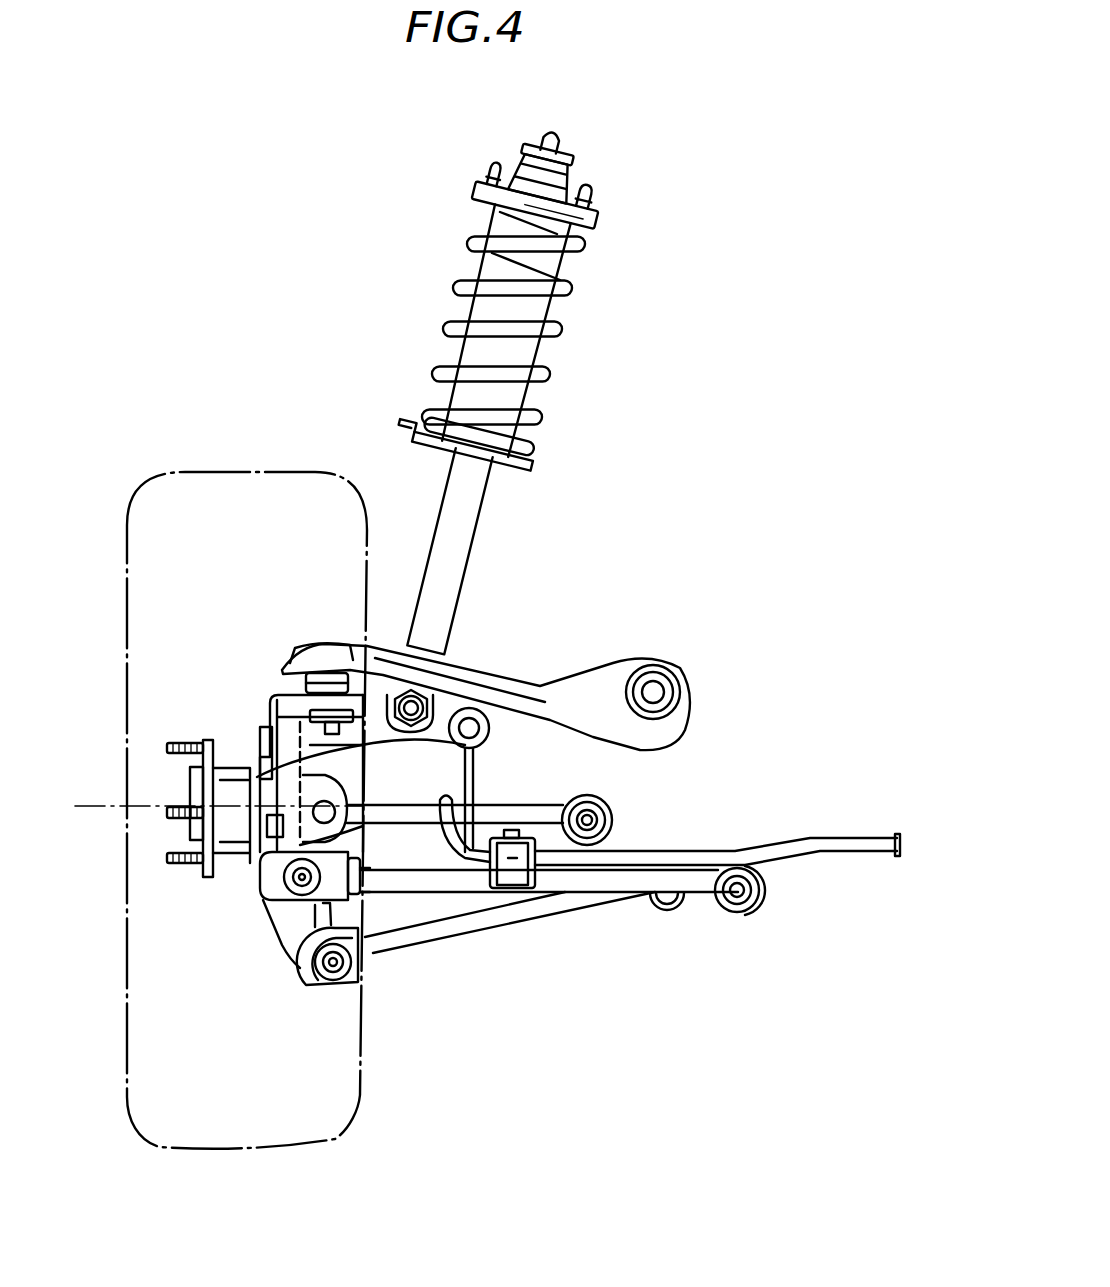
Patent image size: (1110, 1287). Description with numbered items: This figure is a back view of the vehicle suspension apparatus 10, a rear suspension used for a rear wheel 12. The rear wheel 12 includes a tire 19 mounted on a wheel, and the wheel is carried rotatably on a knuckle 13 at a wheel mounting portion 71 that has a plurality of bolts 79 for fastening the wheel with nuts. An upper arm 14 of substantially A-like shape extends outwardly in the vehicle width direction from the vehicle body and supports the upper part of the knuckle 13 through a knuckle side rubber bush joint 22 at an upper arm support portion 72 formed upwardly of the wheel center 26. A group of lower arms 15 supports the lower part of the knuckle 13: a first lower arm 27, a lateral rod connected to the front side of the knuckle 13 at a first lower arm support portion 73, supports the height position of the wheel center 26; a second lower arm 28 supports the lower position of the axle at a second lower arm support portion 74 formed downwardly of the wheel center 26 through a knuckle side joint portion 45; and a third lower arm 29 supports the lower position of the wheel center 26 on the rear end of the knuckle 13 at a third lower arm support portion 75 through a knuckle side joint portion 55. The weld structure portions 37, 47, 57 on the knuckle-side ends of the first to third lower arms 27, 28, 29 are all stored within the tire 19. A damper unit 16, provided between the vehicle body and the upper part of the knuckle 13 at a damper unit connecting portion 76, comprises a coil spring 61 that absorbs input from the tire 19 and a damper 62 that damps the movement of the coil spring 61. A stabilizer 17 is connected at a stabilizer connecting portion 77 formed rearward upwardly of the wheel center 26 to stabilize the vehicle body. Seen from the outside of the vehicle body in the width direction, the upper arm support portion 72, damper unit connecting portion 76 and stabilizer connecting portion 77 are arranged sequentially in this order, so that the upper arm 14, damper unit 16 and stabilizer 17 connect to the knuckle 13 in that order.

The vehicle suspension apparatus 10 is at (248, 118).
The rear wheel 12 is at (176, 455).
The knuckle 13 is at (230, 905).
The upper arm 14 is at (480, 655).
The group of lower arms 15 is at (500, 975).
The damper unit 16 is at (598, 316).
The stabilizer 17 is at (830, 830).
The tire 19 is at (214, 468).
The knuckle side rubber bush joint 22 is at (350, 700).
The wheel center 26 is at (98, 804).
The first lower arm 27 is at (520, 806).
The second lower arm 28 is at (543, 933).
The third lower arm 29 is at (594, 886).
The weld structure portion 37 is at (350, 815).
The knuckle side joint portion 45 is at (342, 982).
The weld structure portion 47 is at (366, 950).
The knuckle side joint portion 55 is at (300, 904).
The weld structure portion 57 is at (364, 878).
The coil spring 61 is at (576, 284).
The damper 62 is at (525, 356).
The wheel mounting portion 71 is at (190, 800).
The upper arm support portion 72 is at (332, 690).
The first lower arm support portion 73 is at (302, 796).
The second lower arm support portion 74 is at (300, 962).
The third lower arm support portion 75 is at (268, 902).
The damper unit connecting portion 76 is at (433, 735).
The stabilizer connecting portion 77 is at (480, 720).
The bolts 79 is at (183, 749).